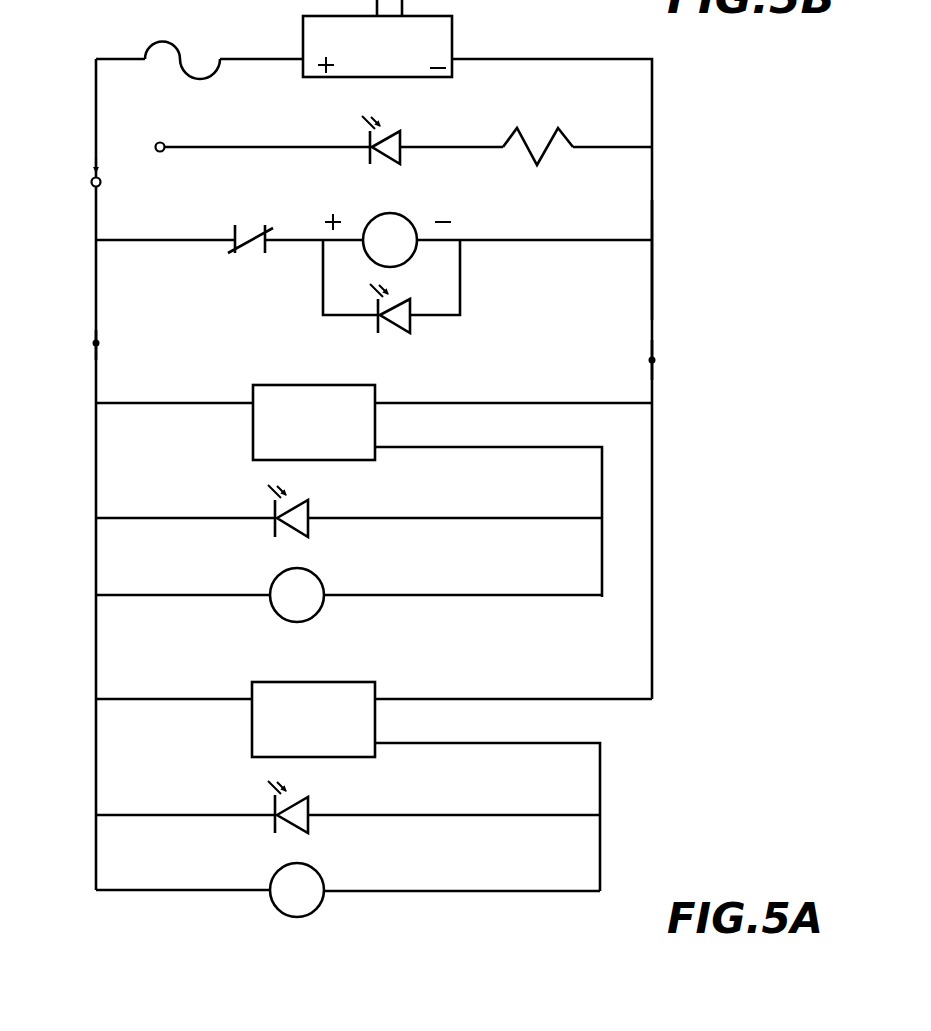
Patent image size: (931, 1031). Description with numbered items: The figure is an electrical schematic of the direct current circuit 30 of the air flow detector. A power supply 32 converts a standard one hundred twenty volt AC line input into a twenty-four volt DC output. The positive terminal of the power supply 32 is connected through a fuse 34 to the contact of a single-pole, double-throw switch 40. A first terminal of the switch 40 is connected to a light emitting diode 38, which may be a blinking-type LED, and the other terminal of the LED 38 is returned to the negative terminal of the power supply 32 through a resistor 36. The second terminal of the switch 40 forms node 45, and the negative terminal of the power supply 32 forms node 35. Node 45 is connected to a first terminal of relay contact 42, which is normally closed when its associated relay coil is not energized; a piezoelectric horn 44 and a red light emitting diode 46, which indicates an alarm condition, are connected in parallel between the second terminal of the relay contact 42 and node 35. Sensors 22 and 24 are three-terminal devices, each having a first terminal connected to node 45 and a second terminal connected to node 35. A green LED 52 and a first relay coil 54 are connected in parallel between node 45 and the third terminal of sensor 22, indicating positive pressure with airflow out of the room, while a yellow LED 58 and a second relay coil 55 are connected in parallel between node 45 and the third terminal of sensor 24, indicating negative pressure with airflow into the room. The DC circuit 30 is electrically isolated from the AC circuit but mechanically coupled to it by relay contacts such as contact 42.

The sensor 22 is at (253, 420).
The sensor 24 is at (253, 710).
The circuit 30 is at (702, 209).
The power supply 32 is at (452, 44).
The fuse 34 is at (164, 38).
The node 35 is at (652, 360).
The resistor 36 is at (560, 129).
The light emitting diode 38 is at (400, 142).
The single-pole, double-throw switch 40 is at (96, 138).
The relay contact 42 is at (230, 231).
The piezoelectric horn 44 is at (404, 215).
The node 45 is at (96, 343).
The light emitting diode 46 is at (404, 333).
The LED 52 is at (309, 511).
The first relay coil 54 is at (313, 573).
The second relay coil 55 is at (314, 863).
The LED 58 is at (311, 799).